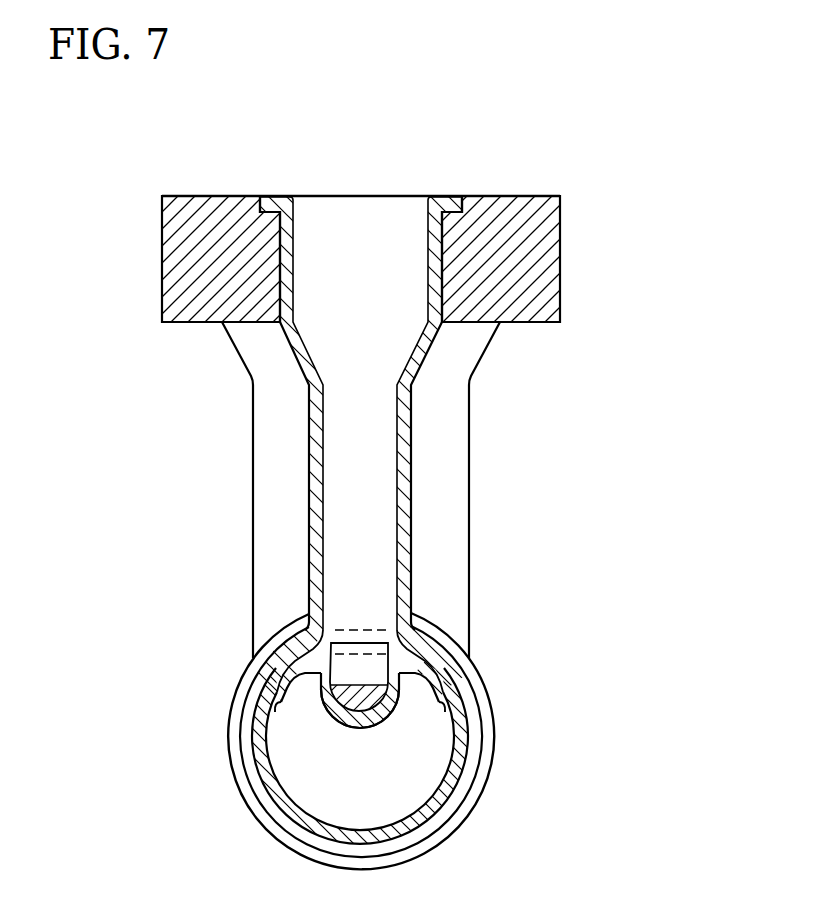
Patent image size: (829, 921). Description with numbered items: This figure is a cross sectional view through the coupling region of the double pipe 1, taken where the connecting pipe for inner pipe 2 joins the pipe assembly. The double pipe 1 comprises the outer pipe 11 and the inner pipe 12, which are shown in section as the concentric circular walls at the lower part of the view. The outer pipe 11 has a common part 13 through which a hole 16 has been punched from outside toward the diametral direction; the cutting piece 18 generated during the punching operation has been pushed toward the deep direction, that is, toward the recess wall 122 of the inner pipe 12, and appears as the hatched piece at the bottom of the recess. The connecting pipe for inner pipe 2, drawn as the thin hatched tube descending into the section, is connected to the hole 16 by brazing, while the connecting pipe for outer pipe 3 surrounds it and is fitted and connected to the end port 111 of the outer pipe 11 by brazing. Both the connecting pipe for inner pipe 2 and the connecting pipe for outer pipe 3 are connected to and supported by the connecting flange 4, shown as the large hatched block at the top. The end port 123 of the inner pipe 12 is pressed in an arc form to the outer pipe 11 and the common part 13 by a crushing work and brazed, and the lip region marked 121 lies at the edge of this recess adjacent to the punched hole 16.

The double pipe 1 is at (222, 772).
The outer pipe 11 is at (466, 776).
The end port of the outer pipe 111 is at (296, 817).
The inner pipe 12 is at (404, 718).
The lip of recess 121 is at (410, 679).
The recess wall 122 is at (342, 726).
The end port of the inner pipe 123 is at (278, 710).
The common part 13 is at (338, 618).
The hole 16 is at (362, 643).
The cutting piece 18 is at (360, 730).
The connecting pipe for inner pipe 2 is at (411, 470).
The connecting pipe for outer pipe 3 is at (468, 553).
The connecting flange 4 is at (162, 279).